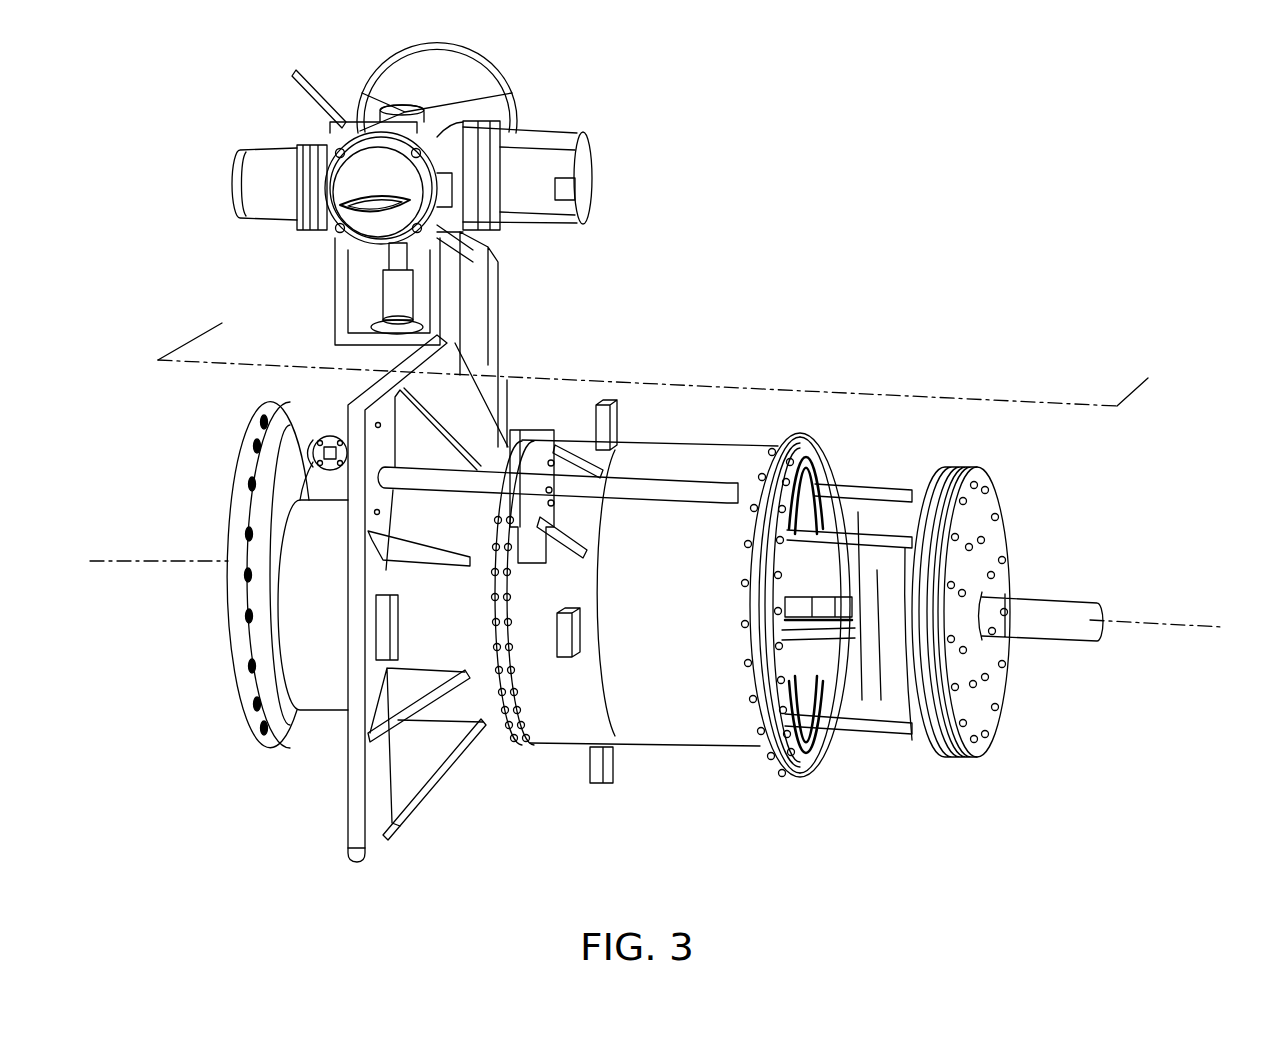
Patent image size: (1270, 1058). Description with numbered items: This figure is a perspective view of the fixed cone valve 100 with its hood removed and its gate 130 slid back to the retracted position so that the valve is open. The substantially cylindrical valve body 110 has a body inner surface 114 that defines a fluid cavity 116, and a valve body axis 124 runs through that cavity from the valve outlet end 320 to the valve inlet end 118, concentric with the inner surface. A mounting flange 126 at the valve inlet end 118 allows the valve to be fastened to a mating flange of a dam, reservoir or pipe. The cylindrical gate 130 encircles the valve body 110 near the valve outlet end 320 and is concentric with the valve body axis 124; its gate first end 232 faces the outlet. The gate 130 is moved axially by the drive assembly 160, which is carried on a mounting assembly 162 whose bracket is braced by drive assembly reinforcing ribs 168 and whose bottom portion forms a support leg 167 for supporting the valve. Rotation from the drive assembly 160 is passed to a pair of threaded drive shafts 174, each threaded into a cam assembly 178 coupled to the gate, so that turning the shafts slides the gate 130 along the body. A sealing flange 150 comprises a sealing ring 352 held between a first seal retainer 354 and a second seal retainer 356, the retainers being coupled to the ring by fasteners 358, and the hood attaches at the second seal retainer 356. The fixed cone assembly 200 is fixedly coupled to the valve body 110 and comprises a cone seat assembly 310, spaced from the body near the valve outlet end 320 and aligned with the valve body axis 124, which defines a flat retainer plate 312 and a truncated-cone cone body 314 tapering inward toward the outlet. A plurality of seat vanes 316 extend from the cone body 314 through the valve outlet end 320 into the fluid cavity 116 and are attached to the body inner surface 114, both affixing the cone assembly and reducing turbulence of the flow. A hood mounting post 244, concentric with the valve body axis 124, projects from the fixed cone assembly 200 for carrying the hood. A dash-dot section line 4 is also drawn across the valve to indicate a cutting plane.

The fixed cone valve 100 is at (778, 138).
The drive assembly 160 is at (552, 85).
The section line 4- 4 is at (232, 317).
The valve body 110 is at (531, 463).
The body inner surface 114 is at (792, 603).
The fluid cavity 116 is at (800, 517).
The valve inlet end 118 is at (223, 667).
The valve body axis 124 is at (1216, 620).
The mounting flange 126 is at (248, 732).
The gate 130 is at (667, 727).
The sealing flange 150 is at (788, 430).
The mounting assembly 162 is at (377, 780).
The support leg 167 is at (373, 847).
The drive assembly reinforcing ribs 168 is at (422, 780).
The threaded drive shafts 174 is at (650, 480).
The cam assembly 178 is at (470, 513).
The fixed cone assembly 200 is at (957, 447).
The gate first end 232 is at (820, 457).
The hood mounting post 244 is at (1077, 613).
The cone seat assembly 310 is at (1007, 482).
The retainer plate 312 is at (982, 662).
The cone body 314 is at (887, 590).
The seat vanes 316 is at (878, 650).
The valve outlet end 320 is at (800, 757).
The sealing ring 352 is at (762, 752).
The first seal retainer 354 is at (752, 708).
The second seal retainer 356 is at (788, 767).
The fasteners 358 is at (748, 673).